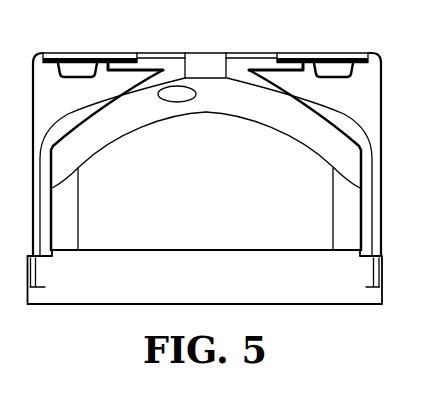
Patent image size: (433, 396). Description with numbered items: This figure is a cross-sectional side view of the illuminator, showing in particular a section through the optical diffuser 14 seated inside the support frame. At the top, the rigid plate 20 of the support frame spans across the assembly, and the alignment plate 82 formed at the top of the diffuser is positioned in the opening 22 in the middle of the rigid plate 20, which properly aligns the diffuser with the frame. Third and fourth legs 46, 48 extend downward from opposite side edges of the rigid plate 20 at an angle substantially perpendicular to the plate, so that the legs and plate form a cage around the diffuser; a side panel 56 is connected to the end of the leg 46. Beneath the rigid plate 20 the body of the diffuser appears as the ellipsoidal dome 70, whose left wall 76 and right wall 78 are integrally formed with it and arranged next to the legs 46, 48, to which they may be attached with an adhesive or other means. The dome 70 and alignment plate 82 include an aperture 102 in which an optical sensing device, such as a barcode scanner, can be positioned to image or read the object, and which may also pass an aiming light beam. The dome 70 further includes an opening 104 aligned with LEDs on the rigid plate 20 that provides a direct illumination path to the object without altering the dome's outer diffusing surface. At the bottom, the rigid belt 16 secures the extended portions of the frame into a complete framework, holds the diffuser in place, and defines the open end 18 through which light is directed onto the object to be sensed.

The optical diffuser 14 is at (337, 101).
The rigid belt 16 is at (300, 306).
The open end 18 is at (120, 319).
The rigid plate 20 is at (100, 53).
The opening 22 is at (140, 58).
The third leg 46 is at (37, 113).
The fourth leg 48 is at (381, 118).
The side panel 56 is at (432, 196).
The dome 70 is at (287, 119).
The left wall 76 is at (45, 212).
The right wall 78 is at (367, 217).
The alignment plate 82 is at (256, 60).
The aperture 102 is at (190, 63).
The opening 104 is at (185, 101).